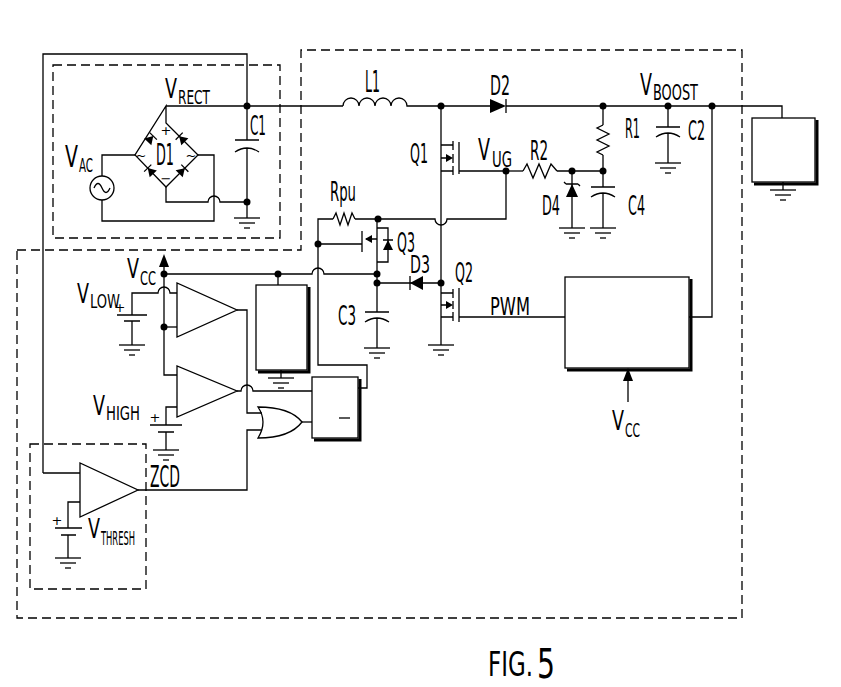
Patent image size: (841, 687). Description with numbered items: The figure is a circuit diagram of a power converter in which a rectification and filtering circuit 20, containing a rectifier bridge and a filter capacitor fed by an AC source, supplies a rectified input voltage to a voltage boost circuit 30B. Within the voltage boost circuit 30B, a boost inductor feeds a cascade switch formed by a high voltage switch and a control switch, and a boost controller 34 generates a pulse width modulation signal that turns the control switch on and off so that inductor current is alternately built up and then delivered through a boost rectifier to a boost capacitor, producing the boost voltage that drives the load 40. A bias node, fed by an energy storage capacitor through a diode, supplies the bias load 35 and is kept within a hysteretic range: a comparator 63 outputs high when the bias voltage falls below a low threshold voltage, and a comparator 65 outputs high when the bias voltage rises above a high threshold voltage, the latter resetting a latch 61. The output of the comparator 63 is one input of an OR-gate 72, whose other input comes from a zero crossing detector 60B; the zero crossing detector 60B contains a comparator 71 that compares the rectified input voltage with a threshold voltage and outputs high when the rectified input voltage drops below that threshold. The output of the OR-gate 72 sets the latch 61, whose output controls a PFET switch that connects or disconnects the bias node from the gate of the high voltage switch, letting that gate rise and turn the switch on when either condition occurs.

The rectification and filtering circuit 20 is at (276, 63).
The voltage boost circuit 30B is at (742, 440).
The boost controller 34 is at (637, 354).
The bias load 35 is at (290, 363).
The load 40 is at (792, 173).
The zero crossing detector 60B is at (146, 553).
The latch 61 is at (358, 418).
The comparator 63 is at (205, 321).
The comparator 65 is at (205, 401).
The comparator 71 is at (110, 499).
The OR-gate 72 is at (276, 438).